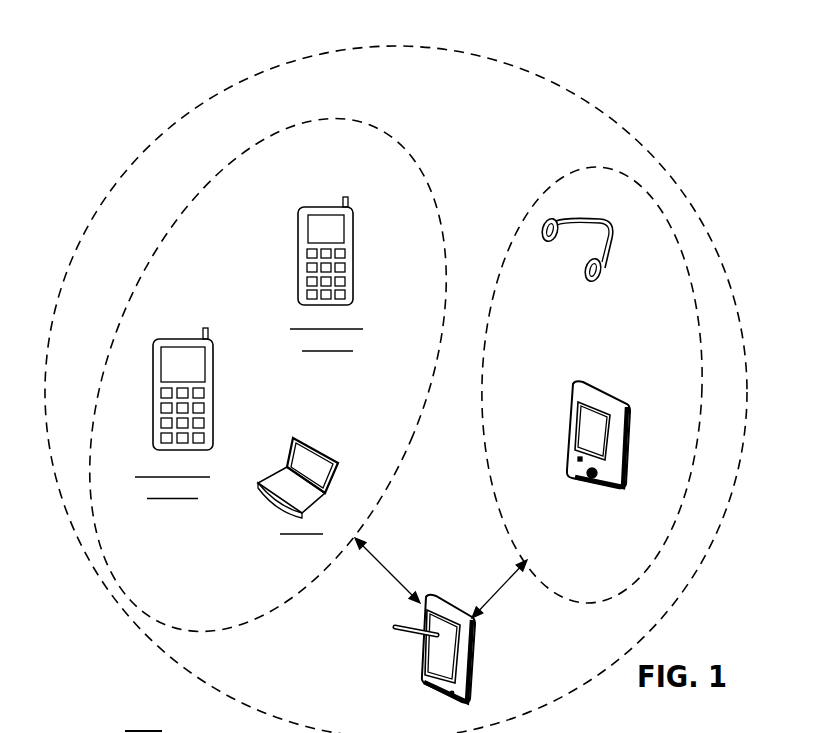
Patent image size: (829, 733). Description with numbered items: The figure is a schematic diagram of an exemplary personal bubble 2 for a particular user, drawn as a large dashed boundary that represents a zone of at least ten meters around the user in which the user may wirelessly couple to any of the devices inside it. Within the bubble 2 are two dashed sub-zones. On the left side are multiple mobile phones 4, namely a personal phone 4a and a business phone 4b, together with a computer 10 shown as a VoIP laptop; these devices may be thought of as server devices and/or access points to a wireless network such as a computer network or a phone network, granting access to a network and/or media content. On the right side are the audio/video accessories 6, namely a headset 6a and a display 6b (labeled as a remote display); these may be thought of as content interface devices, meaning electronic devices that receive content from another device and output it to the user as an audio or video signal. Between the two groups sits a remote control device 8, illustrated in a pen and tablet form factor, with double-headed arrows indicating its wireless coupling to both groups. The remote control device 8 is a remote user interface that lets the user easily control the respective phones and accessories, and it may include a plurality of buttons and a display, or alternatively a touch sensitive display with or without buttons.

The personal bubble 2 is at (164, 62).
The mobile phones 4 is at (200, 269).
The personal phone 4a is at (315, 207).
The business phone 4b is at (188, 338).
The computer 10 is at (287, 457).
The audio/video accessories 6 is at (638, 327).
The headset 6a is at (659, 291).
The display 6b is at (568, 417).
The remote control device 8 is at (447, 600).